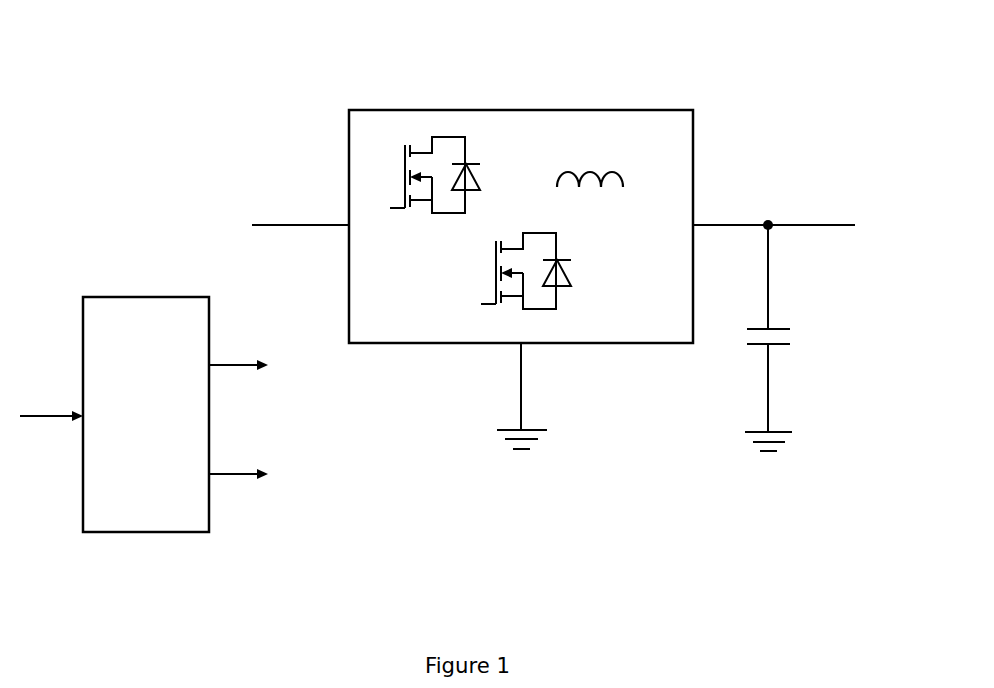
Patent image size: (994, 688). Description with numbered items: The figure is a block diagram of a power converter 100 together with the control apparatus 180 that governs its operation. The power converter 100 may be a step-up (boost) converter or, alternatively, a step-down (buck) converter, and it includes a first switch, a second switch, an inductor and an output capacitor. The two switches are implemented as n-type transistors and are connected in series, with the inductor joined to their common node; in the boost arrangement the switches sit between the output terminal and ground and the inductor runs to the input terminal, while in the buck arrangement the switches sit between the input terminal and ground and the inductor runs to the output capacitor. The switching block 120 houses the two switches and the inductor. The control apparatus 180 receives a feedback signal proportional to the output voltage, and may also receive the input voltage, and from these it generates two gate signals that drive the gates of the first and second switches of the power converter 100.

The power converter 100 is at (895, 43).
The power stage 120 is at (666, 333).
The control apparatus 180 is at (167, 427).